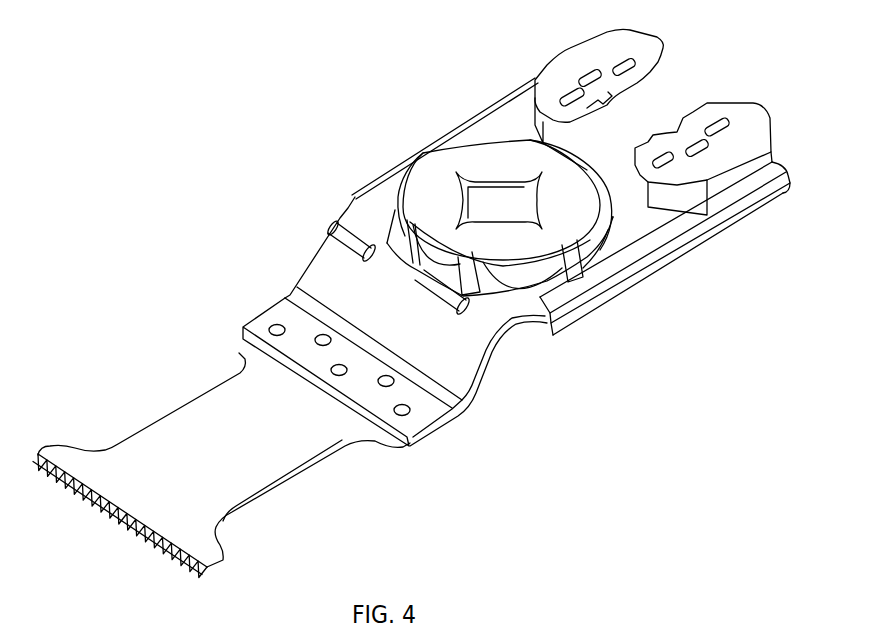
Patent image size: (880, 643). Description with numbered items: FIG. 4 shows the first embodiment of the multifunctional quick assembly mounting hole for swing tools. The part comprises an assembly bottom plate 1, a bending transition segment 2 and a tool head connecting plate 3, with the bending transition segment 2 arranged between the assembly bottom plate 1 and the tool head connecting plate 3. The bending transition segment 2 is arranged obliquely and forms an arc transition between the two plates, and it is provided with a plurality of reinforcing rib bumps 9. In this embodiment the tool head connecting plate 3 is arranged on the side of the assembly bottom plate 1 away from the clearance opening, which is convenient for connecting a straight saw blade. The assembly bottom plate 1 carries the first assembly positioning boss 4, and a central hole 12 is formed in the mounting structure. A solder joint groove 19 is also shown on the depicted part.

The assembly bottom plate 1 is at (387, 188).
The bending transition segment 2 is at (480, 375).
The tool head connecting plate 3 is at (250, 320).
The first assembly positioning boss 4 is at (557, 284).
The reinforcing rib bump 9 is at (360, 253).
The central hole 12 is at (527, 204).
The solder joint groove 19 is at (270, 334).